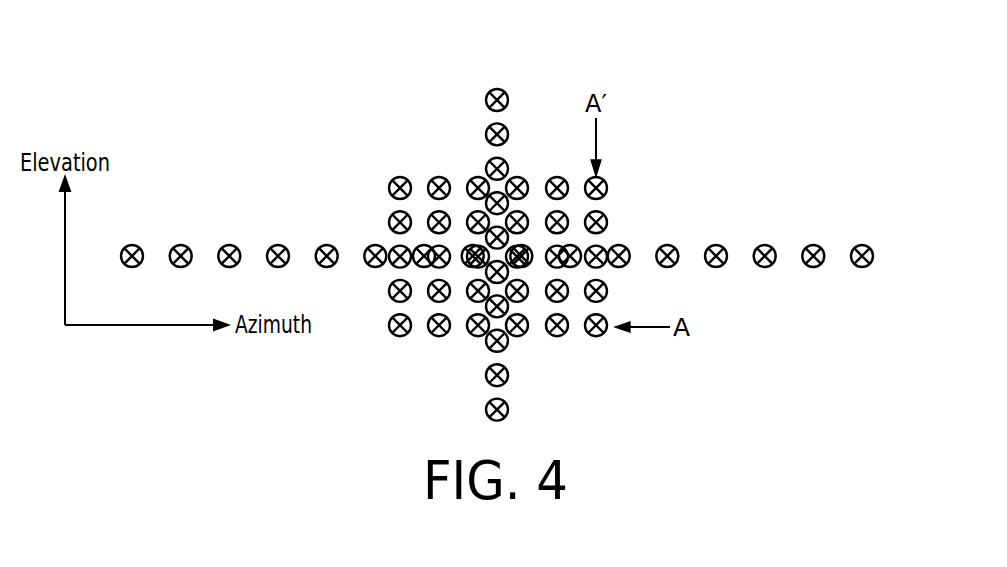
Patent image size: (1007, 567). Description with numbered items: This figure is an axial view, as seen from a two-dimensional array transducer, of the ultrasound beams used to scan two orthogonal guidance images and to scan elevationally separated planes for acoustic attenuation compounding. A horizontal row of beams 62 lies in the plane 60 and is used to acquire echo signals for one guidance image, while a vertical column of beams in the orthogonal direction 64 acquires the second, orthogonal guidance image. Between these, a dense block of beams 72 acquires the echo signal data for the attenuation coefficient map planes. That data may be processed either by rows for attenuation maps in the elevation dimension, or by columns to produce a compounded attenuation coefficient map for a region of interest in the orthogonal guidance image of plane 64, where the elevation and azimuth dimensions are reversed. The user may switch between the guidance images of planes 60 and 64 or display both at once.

The plane 60 is at (883, 256).
The beams 62 is at (486, 134).
The orthogonal direction 64 is at (496, 85).
The beams 72 is at (388, 178).